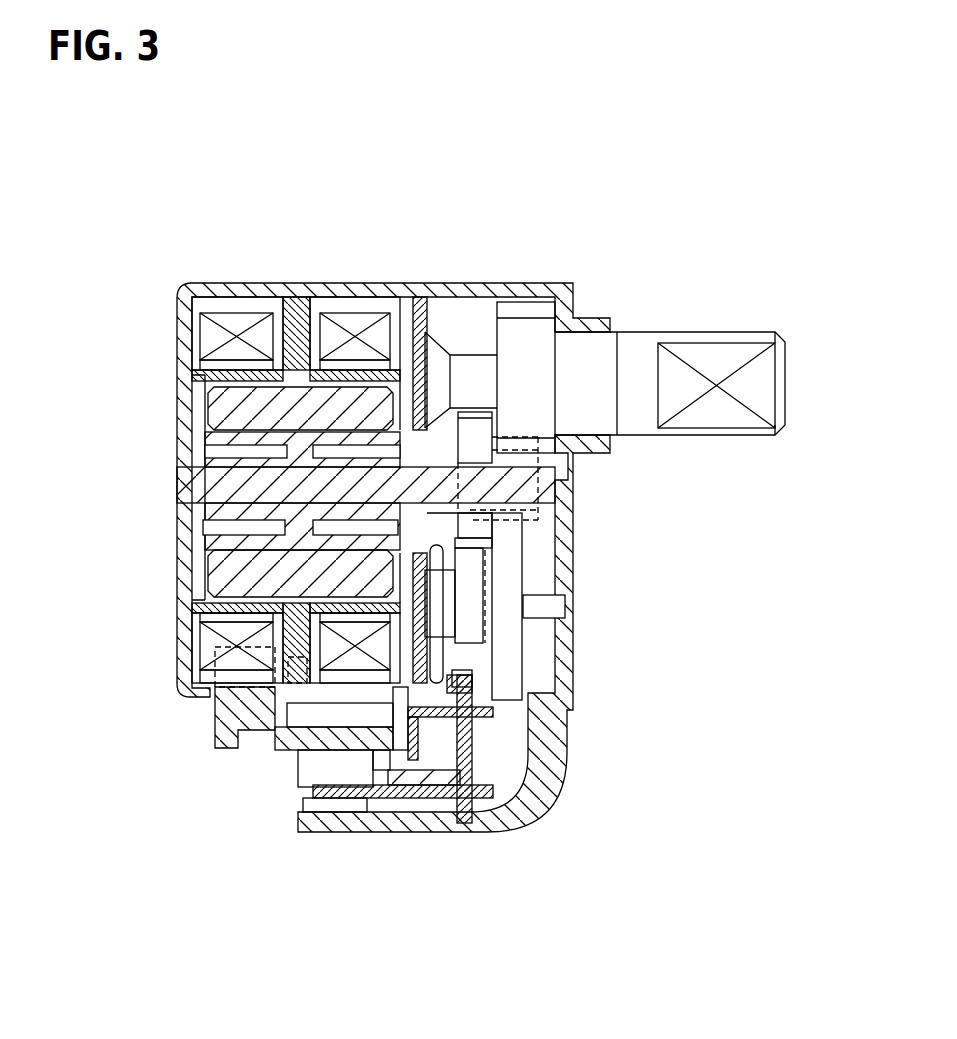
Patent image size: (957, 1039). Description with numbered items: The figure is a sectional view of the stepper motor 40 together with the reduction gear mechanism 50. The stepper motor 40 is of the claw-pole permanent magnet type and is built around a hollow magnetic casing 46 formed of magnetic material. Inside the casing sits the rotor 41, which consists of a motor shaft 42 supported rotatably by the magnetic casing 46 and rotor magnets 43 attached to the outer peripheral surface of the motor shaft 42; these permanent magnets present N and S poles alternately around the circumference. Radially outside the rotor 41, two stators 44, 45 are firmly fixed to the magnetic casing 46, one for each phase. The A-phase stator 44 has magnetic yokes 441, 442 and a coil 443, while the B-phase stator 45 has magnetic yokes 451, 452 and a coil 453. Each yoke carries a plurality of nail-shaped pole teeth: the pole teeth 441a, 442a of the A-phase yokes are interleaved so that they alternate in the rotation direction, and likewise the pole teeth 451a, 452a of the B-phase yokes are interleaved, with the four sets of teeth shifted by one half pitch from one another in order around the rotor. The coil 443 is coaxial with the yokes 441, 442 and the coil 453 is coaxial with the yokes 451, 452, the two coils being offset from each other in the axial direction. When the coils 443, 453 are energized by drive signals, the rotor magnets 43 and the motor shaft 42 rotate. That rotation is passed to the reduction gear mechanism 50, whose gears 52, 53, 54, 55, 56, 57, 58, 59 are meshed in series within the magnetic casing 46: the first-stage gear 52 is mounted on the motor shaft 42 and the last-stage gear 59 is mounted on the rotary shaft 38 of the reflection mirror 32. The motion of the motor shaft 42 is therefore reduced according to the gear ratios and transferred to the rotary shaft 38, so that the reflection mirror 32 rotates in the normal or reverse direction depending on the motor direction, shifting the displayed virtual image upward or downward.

The stepper motor 40 is at (312, 536).
The rotor 41 is at (312, 492).
The motor shaft 42 is at (262, 467).
The rotor magnets 43 is at (208, 398).
The stator 44 is at (219, 465).
The magnetic yoke 441 is at (203, 375).
The pole teeth 441a is at (210, 688).
The magnetic yoke 442 is at (203, 372).
The pole teeth 442a is at (281, 604).
The coil 443 is at (236, 447).
The stator 45 is at (374, 432).
The magnetic yoke 451 is at (308, 348).
The pole teeth 451a is at (303, 603).
The magnetic yoke 452 is at (380, 318).
The pole teeth 452a is at (378, 625).
The coil 453 is at (358, 330).
The magnetic casing 46 is at (192, 552).
The reduction gear mechanism 50 is at (523, 667).
The gear 52 is at (563, 525).
The gear 53 is at (513, 560).
The gear 54 is at (448, 635).
The gear 55 is at (450, 823).
The gear 56 is at (435, 680).
The gear 57 is at (485, 416).
The gear 58 is at (577, 467).
The gear 59 is at (527, 313).
The reflection mirror 32 is at (670, 329).
The rotary shaft 38 is at (637, 357).